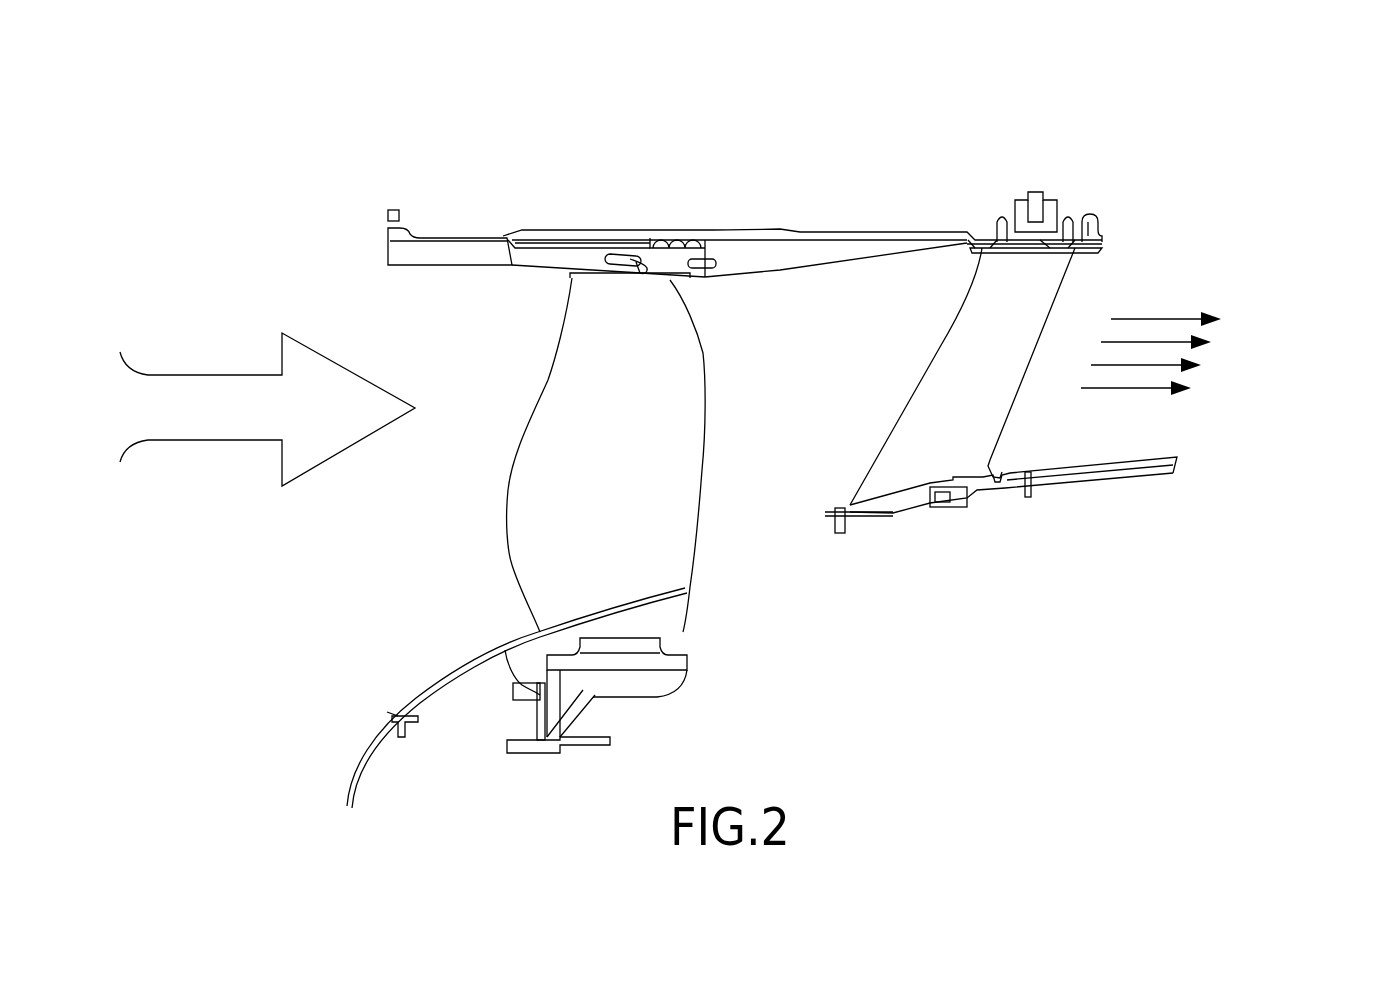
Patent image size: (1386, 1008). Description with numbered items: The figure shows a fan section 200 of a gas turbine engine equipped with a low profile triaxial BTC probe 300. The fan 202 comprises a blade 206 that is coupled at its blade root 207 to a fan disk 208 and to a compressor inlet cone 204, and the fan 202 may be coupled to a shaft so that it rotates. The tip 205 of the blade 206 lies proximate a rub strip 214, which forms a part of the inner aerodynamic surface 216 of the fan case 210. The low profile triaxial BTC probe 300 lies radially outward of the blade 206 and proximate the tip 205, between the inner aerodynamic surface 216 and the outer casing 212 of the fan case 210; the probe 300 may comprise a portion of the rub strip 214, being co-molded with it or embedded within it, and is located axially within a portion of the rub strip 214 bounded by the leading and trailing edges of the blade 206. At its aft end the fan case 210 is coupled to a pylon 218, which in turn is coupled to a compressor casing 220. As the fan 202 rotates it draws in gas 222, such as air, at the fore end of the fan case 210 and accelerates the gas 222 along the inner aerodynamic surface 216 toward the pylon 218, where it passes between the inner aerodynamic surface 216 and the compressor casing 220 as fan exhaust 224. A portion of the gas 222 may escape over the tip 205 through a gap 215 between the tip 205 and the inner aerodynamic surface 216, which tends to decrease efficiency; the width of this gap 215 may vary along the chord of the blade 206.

The fan section 200 is at (250, 126).
The fan 202 is at (618, 489).
The compressor inlet cone 204 is at (433, 682).
The tip 205 is at (583, 286).
The blade 206 is at (540, 545).
The blade root 207 is at (687, 638).
The fan disk 208 is at (663, 662).
The fan case 210 is at (486, 247).
The outer casing 212 is at (777, 236).
The rub strip 214 is at (523, 268).
The gap 215 is at (613, 277).
The inner aerodynamic surface 216 is at (722, 278).
The pylon 218 is at (1057, 273).
The compressor casing 220 is at (1080, 476).
The gas 222 is at (222, 440).
The fan exhaust 224 is at (1190, 319).
The low profile triaxial BTC probe 300 is at (648, 277).